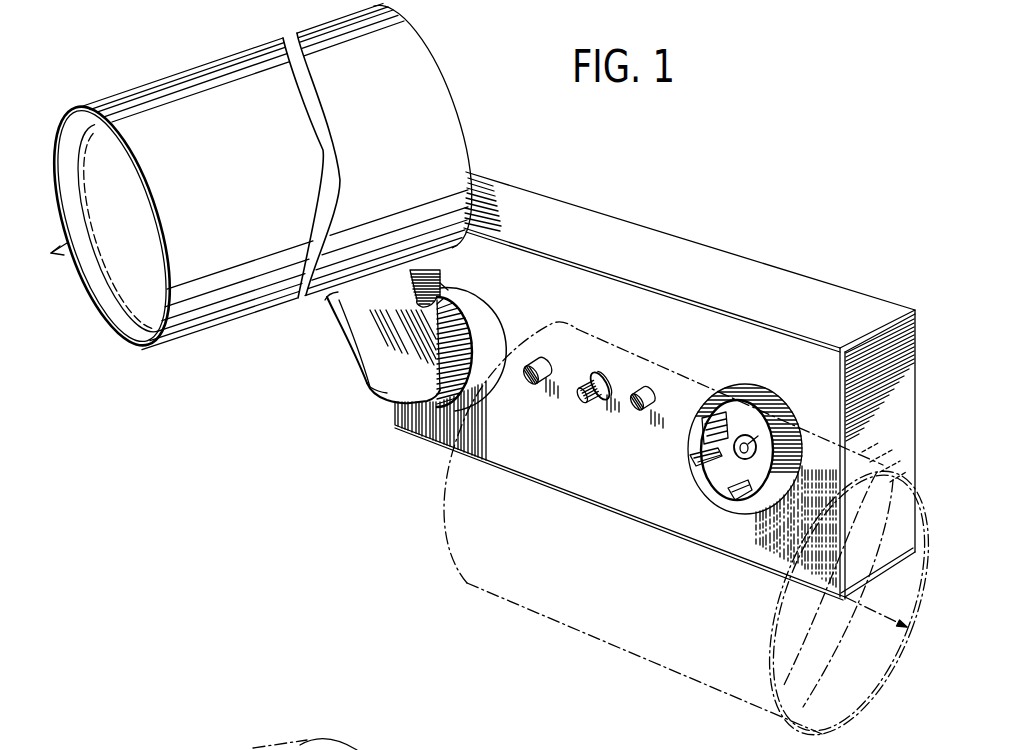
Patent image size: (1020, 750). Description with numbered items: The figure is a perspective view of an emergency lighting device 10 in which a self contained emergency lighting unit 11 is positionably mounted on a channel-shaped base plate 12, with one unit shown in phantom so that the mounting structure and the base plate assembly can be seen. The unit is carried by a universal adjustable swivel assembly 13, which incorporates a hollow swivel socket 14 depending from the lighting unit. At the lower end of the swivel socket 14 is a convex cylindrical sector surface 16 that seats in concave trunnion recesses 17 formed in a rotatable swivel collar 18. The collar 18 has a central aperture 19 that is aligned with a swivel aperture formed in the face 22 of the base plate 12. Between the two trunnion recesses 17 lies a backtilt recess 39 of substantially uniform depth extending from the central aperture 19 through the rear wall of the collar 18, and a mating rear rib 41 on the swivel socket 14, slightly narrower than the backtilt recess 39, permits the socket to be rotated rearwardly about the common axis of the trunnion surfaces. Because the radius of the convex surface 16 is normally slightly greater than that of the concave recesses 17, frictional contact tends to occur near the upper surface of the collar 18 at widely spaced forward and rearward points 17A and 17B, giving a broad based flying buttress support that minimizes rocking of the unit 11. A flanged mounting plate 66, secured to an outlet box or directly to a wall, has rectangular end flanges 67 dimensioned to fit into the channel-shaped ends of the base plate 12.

The emergency lighting device 10 is at (405, 475).
The emergency lighting unit 11 is at (407, 63).
The base plate 12 is at (662, 386).
The universal adjustable swivel assembly 13 is at (382, 352).
The swivel socket 14 is at (342, 329).
The convex cylindrical sector surface 16 is at (373, 394).
The concave trunnion recesses 17 is at (724, 463).
The forward frictional engagement point 17A is at (744, 496).
The rearward frictional engagement point 17B is at (700, 474).
The swivel collar 18 is at (478, 324).
The central aperture 19 is at (748, 448).
The face of base plate 22 is at (660, 337).
The backtilt recess 39 is at (447, 287).
The rear rib 41 is at (440, 278).
The flanged mounting plate 66 is at (920, 319).
The end flanges 67 is at (903, 405).